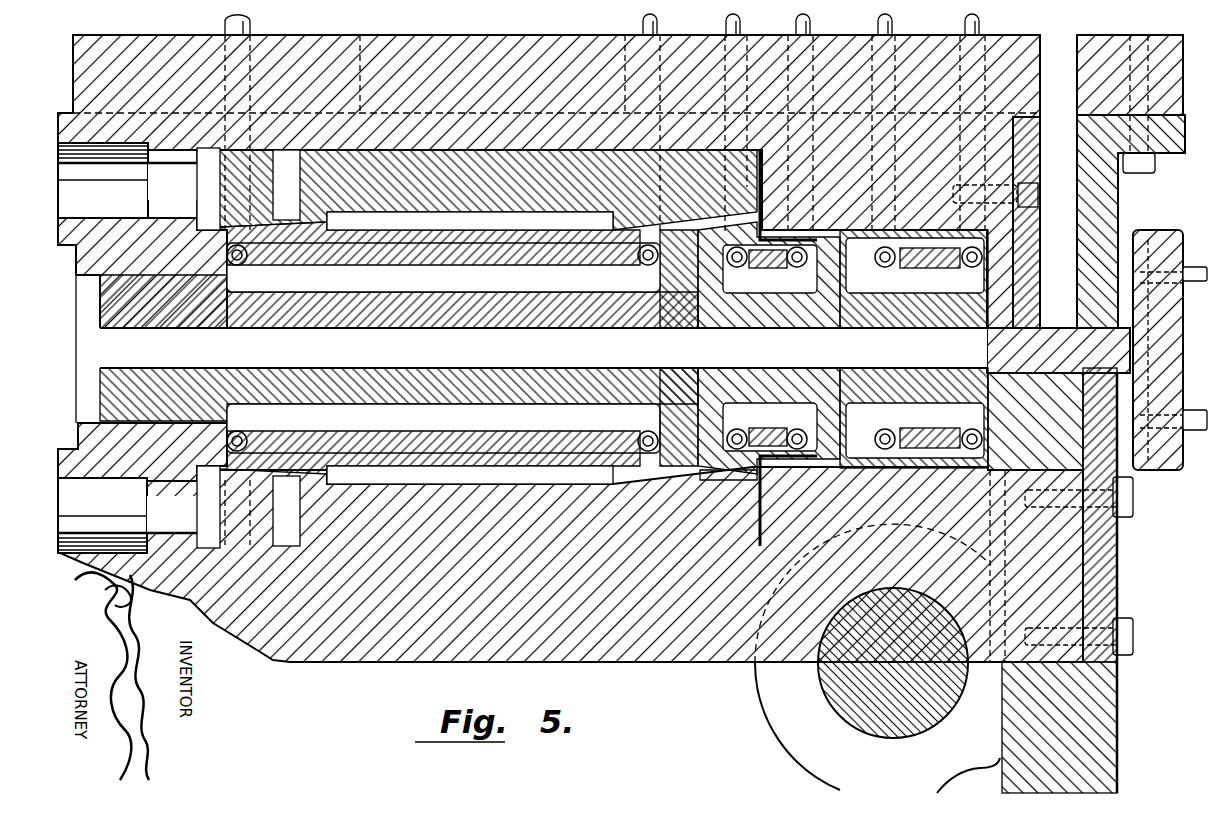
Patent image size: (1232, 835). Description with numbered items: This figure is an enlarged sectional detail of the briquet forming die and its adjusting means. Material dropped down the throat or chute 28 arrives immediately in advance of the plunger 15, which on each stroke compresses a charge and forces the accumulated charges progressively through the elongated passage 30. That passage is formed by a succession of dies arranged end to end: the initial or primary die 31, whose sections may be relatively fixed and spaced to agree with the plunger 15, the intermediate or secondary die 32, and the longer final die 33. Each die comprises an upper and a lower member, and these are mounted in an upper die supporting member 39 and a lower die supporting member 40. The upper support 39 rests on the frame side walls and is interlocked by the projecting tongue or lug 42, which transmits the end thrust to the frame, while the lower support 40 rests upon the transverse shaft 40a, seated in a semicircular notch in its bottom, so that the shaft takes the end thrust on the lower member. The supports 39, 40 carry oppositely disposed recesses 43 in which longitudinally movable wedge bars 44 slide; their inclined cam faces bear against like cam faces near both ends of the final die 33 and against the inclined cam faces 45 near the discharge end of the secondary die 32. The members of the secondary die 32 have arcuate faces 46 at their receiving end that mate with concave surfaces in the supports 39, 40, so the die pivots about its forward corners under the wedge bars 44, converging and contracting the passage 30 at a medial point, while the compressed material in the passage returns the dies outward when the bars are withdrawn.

The tongue or elevated lug 42 is at (625, 88).
The throat or chute 28 is at (1058, 181).
The arcuate faces 46 is at (817, 240).
The plunger 15 is at (1160, 230).
The wedge bars 44 is at (455, 185).
The upper die supporting member 39 is at (490, 130).
The elongated passage 30 is at (531, 349).
The final die 33 is at (582, 307).
The intermediate or secondary die 32 is at (830, 300).
The initial or primary die 31 is at (883, 307).
The recesses 43 is at (287, 543).
The lower die supporting member 40 is at (378, 630).
The inclined cam faces 45 is at (722, 470).
The transverse shaft 40a is at (872, 700).